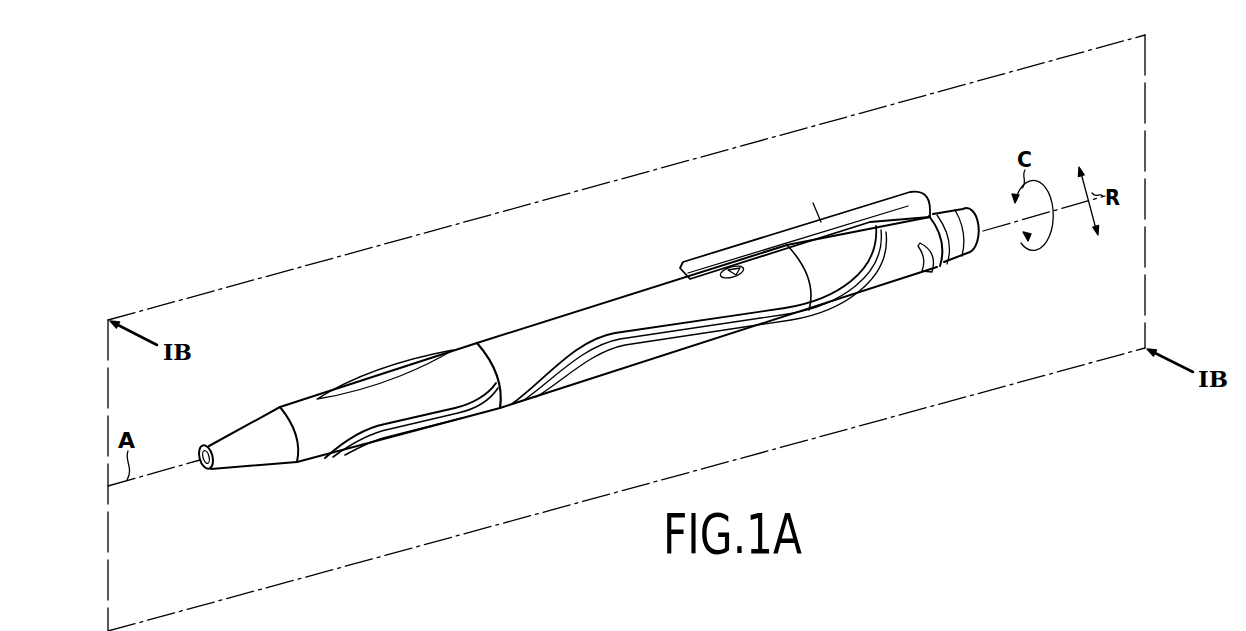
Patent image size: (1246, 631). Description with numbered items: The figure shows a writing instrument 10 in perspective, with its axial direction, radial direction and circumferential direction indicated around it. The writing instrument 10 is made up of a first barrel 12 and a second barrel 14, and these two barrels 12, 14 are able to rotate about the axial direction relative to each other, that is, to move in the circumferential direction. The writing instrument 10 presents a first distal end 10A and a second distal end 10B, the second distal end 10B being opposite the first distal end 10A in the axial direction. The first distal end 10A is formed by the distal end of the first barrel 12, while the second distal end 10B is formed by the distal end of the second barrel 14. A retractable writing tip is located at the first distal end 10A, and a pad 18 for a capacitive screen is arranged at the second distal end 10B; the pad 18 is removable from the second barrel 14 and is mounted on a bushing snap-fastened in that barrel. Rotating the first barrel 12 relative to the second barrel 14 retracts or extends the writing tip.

The writing instrument 10 is at (386, 216).
The first distal end 10A is at (205, 471).
The second distal end 10B is at (930, 271).
The first barrel 12 is at (453, 348).
The second barrel 14 is at (543, 327).
The pad 18 is at (977, 217).